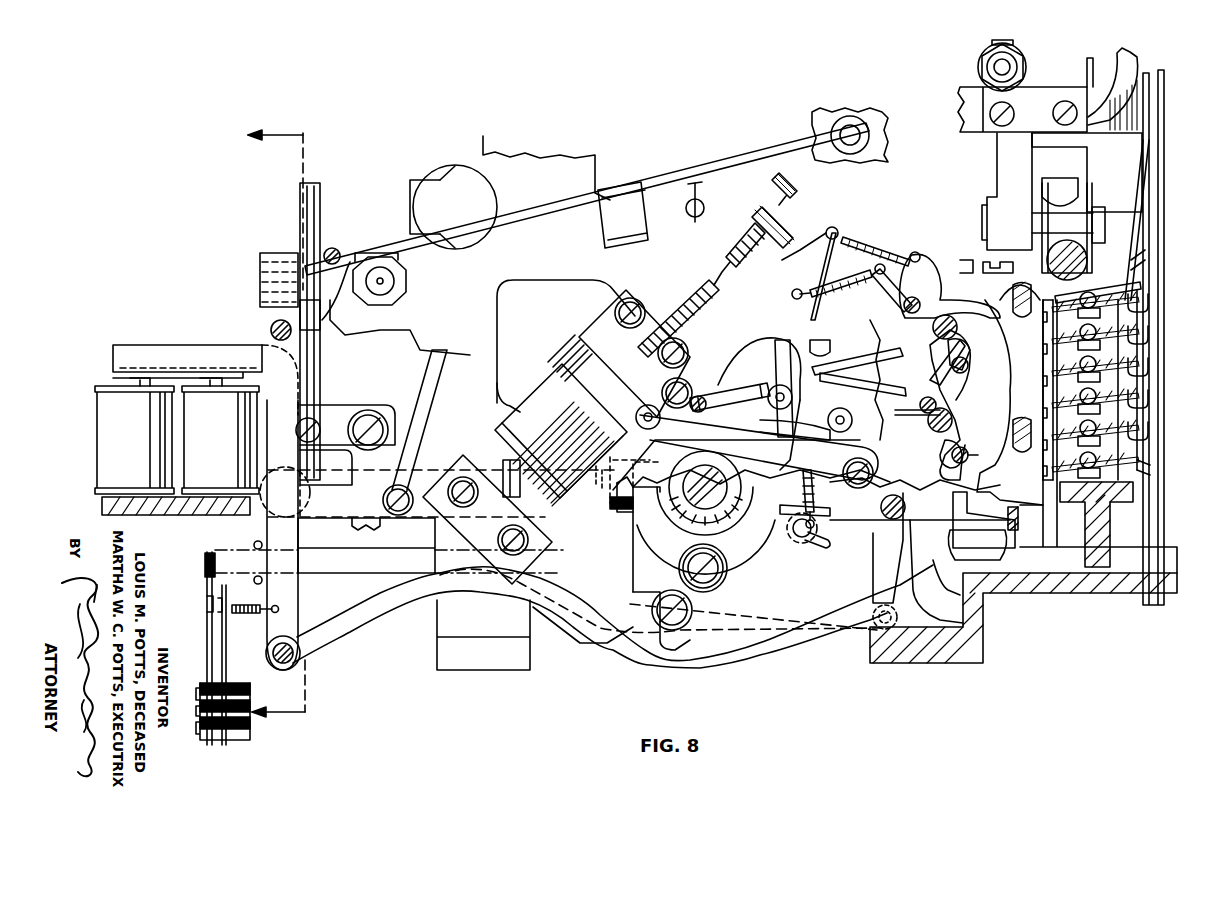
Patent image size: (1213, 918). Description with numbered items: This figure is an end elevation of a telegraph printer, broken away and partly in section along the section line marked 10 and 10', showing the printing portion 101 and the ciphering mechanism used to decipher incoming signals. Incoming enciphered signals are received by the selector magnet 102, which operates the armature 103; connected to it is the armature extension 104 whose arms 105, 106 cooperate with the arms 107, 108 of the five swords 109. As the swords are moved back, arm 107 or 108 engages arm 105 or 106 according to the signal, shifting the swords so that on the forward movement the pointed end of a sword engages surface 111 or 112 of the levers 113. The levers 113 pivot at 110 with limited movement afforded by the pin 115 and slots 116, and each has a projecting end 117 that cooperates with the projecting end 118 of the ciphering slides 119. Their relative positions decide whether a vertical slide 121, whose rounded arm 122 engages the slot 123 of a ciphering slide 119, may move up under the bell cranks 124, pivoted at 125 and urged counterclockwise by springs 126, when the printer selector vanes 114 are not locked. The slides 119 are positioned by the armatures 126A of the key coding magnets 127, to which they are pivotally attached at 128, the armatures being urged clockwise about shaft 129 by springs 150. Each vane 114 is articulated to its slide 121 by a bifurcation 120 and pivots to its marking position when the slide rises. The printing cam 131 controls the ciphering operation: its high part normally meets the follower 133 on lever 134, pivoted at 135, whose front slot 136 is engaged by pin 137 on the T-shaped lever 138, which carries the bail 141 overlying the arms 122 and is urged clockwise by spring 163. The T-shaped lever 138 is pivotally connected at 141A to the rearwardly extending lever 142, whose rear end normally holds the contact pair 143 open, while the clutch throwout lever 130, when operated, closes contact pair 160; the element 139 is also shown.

The section line 10 is at (291, 208).
The section line 10' is at (296, 692).
The printing portion 101 is at (651, 166).
The selector magnet 102 is at (508, 425).
The armature 103 is at (586, 336).
The armature extension 104 is at (715, 392).
The arm 105 is at (810, 340).
The arm 106 is at (803, 420).
The arm 107 is at (817, 338).
The arm 108 is at (866, 447).
The swords 109 is at (900, 388).
The pivot 110 is at (967, 360).
The surface 111 is at (958, 340).
The surface 112 is at (975, 380).
The levers 113 is at (982, 392).
The printer selector vanes 114 is at (1160, 428).
The pin 115 is at (980, 412).
The slots 116 is at (956, 452).
The projecting end 117 is at (975, 483).
The projecting end 118 is at (952, 507).
The ciphering slides 119 is at (736, 645).
The bifurcation 120 is at (1085, 290).
The vertical slide 121 is at (1030, 503).
The rounded arm 122 is at (998, 597).
The slot 123 is at (915, 570).
The bell cranks 124 is at (933, 272).
The pivot 125 is at (900, 307).
The springs 126 is at (866, 243).
The armatures 126A is at (300, 600).
The key coding magnets 127 is at (98, 447).
The pivotal attachment 128 is at (285, 668).
The shaft 129 is at (270, 330).
The clutch throwout lever 130 is at (628, 532).
The printing cam 131 is at (770, 472).
The follower 133 is at (742, 545).
The lever 134 is at (565, 520).
The pivot 135 is at (295, 497).
The slot 136 is at (832, 513).
The pin 137 is at (804, 540).
The T-shaped lever 138 is at (875, 592).
The plate 139 is at (903, 500).
The bail 141 is at (1020, 553).
The pivotal connection 141A is at (880, 628).
The rearwardly extending lever 142 is at (348, 553).
The contact pair 143 is at (212, 590).
The springs 150 is at (264, 618).
The contact pair 160 is at (625, 460).
The spring 163 is at (808, 475).